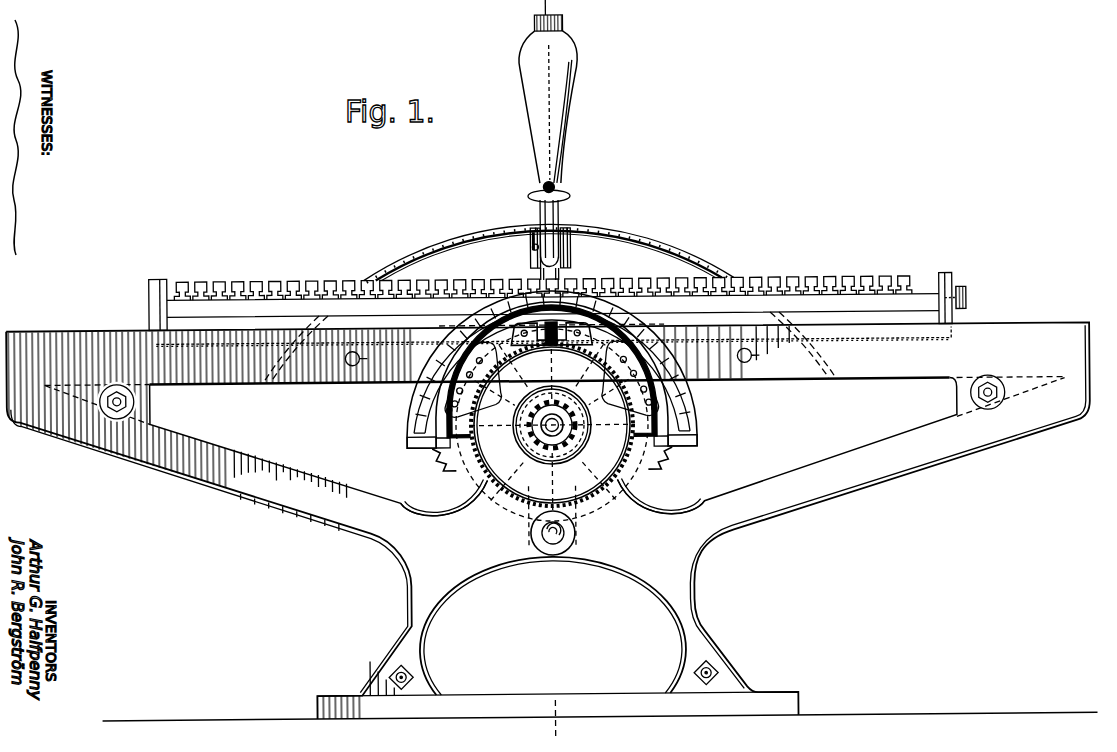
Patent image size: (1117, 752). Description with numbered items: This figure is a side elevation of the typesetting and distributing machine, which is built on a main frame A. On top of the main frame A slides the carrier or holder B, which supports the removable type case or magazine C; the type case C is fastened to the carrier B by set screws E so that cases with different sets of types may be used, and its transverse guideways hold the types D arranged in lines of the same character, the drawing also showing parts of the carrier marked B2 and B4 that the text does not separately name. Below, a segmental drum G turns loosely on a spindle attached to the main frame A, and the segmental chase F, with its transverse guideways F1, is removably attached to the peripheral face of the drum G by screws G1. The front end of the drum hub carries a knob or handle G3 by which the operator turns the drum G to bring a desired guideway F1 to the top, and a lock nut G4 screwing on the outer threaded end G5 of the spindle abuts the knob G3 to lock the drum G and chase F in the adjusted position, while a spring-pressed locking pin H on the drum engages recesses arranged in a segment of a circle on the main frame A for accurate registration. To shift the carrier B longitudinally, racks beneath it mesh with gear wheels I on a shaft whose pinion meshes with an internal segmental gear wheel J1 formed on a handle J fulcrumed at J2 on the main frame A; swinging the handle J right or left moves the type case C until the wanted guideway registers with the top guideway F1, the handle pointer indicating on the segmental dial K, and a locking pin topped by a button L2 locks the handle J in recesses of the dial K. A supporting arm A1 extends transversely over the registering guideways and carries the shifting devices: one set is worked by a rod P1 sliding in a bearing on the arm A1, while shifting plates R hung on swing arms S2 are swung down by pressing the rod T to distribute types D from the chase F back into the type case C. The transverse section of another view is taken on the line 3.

The main frame A is at (551, 521).
The supporting arm A1 is at (562, 216).
The carrier or holder B is at (150, 300).
The slide bar B2 is at (266, 335).
The spring B4 is at (892, 342).
The type case or magazine C is at (232, 296).
The types D is at (284, 291).
The set screws E is at (968, 302).
The chase F is at (406, 404).
The guideways F1 is at (424, 441).
The segmental drum G is at (430, 462).
The screws G1 is at (552, 379).
The knob or handle G3 is at (597, 496).
The lock nut G4 is at (546, 470).
The outer threaded end G5 is at (540, 442).
The locking pin H is at (642, 392).
The gear wheels I is at (483, 497).
The handle J is at (563, 123).
The internal segmental gear wheel J1 is at (456, 472).
The fulcrum J2 is at (550, 545).
The segmental dial K is at (636, 232).
The button L2 is at (566, 24).
The rod P1 is at (543, 188).
The shifting plates R is at (540, 276).
The swing arms S2 is at (532, 250).
The rod T is at (531, 234).
The section line 3 is at (554, 726).